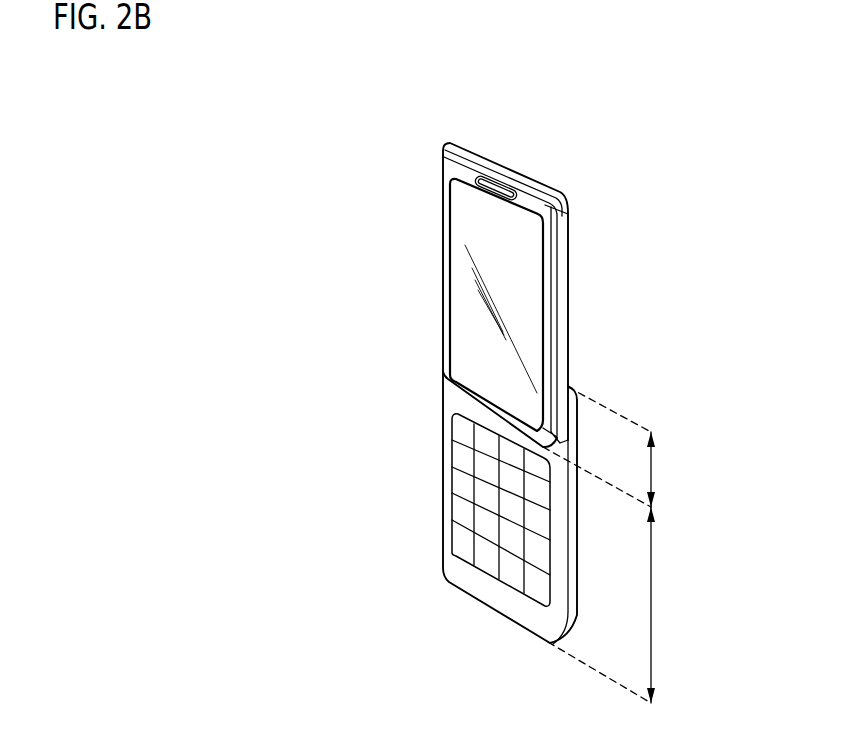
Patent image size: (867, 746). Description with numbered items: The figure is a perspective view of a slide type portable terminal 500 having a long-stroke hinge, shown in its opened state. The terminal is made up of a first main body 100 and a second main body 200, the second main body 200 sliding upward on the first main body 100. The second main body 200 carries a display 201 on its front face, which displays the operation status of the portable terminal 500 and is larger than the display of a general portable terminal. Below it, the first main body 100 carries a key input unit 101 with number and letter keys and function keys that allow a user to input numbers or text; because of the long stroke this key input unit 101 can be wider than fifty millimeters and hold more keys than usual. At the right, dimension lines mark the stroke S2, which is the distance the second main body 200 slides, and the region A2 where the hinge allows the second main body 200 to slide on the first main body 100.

The slide type portable terminal 500 is at (428, 57).
The second main body 200 is at (430, 258).
The display 201 is at (525, 295).
The first main body 100 is at (570, 645).
The key input unit 101 is at (467, 490).
The hinge region A2 is at (667, 469).
The stroke S2 is at (667, 605).